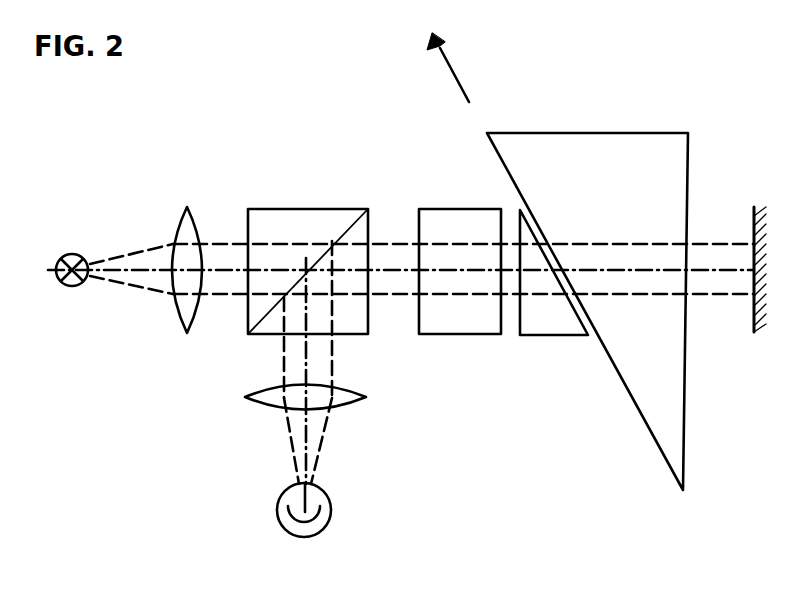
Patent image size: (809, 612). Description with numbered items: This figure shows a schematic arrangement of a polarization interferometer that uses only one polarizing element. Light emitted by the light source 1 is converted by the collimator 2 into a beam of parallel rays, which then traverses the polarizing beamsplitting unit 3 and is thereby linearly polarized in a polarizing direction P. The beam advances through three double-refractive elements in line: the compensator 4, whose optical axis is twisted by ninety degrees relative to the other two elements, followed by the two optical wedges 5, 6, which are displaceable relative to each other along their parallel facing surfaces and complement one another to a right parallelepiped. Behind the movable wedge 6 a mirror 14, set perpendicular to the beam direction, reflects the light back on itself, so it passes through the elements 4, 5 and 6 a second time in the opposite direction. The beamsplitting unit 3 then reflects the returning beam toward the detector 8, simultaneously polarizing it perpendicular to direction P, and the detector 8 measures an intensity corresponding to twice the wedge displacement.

The light source 1 is at (72, 251).
The collimator 2 is at (187, 251).
The polarizing beamsplitting unit 3 is at (308, 251).
The compensator 4 is at (460, 251).
The optical wedge 5 is at (554, 302).
The movable optical wedge 6 is at (587, 311).
The detector 8 is at (304, 538).
The mirror 14 is at (758, 250).